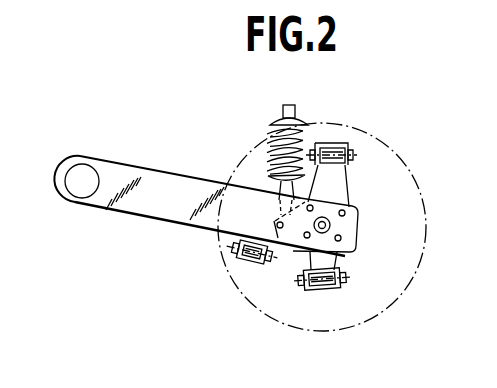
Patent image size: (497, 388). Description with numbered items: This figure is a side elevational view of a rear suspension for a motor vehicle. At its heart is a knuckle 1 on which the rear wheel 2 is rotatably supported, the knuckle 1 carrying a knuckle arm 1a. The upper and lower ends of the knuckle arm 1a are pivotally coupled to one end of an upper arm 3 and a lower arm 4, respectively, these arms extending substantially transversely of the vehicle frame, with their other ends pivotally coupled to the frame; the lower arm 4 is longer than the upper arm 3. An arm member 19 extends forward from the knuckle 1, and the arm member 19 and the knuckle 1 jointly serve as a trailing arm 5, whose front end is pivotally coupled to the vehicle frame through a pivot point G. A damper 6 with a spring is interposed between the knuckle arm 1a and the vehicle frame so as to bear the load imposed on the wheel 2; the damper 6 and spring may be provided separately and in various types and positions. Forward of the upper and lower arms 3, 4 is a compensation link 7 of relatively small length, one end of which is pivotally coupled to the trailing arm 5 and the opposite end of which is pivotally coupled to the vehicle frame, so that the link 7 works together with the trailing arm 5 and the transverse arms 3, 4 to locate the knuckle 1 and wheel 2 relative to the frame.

The knuckle 1 is at (345, 237).
The knuckle arm 1a is at (333, 190).
The rear wheel 2 is at (402, 163).
The upper arm 3 is at (336, 152).
The lower arm 4 is at (325, 283).
The trailing arm 5 is at (203, 170).
The damper 6 is at (283, 122).
The compensation link 7 is at (255, 258).
The arm member 19 is at (175, 215).
The pivot point G is at (83, 187).